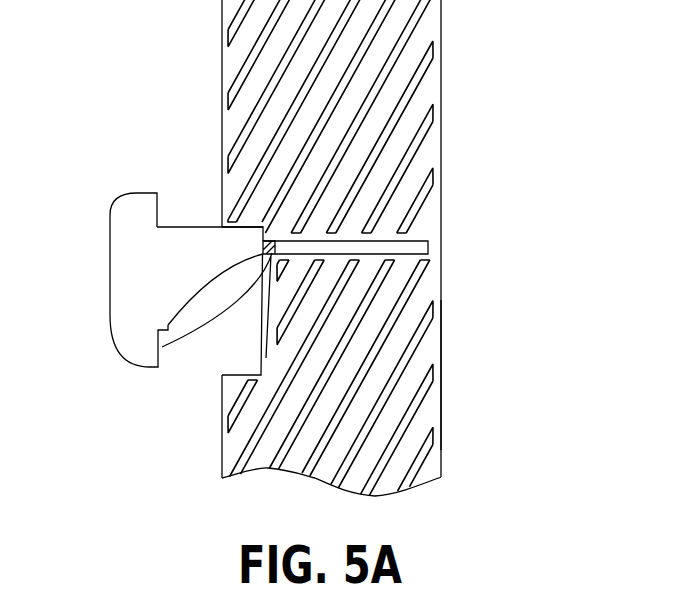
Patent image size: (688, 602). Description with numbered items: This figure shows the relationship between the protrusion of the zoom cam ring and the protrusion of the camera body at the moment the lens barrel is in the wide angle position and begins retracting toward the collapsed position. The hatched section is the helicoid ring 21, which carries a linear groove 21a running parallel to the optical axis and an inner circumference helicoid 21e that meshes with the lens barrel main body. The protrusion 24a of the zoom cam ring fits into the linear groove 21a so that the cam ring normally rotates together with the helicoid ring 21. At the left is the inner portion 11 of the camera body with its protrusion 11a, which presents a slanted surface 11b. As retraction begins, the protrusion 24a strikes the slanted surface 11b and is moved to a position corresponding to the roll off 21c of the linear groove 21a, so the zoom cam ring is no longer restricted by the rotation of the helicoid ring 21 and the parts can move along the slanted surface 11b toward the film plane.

The inner portion of the camera body 11 is at (123, 243).
The protrusion 11a is at (183, 229).
The slanted surface 11b is at (187, 303).
The helicoid ring 21 is at (425, 287).
The linear groove 21a is at (428, 242).
The roll off 21c is at (232, 360).
The inner circumference helicoid 21e is at (417, 364).
The protrusion 24a is at (162, 347).